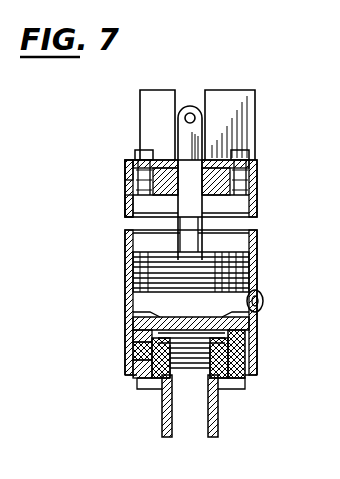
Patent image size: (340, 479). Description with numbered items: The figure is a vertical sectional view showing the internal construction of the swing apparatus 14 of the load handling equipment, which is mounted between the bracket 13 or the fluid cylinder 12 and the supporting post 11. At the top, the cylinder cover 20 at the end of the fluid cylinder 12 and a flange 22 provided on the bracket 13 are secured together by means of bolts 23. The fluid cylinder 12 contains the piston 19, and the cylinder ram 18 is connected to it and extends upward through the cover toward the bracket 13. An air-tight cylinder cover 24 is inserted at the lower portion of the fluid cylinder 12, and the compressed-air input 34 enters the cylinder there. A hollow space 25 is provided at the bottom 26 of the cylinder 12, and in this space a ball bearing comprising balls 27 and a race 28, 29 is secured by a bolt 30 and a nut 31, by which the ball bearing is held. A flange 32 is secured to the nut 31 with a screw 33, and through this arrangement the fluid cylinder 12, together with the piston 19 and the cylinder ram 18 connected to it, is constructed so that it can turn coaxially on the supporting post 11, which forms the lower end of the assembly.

The post 11 is at (220, 435).
The fluid cylinder 12 is at (257, 208).
The bracket 13 is at (258, 110).
The swing apparatus 14 is at (258, 387).
The cylinder ram 18 is at (255, 165).
The piston 19 is at (250, 262).
The cylinder cover 20 is at (125, 213).
The flange 22 is at (125, 167).
The bolts 23 is at (135, 153).
The air-tight cylinder cover 24 is at (257, 342).
The hollow space 25 is at (135, 312).
The bottom 26 is at (215, 306).
The balls 27 is at (133, 348).
The race 28 is at (133, 332).
The race 29 is at (133, 372).
The bolt 30 is at (162, 388).
The nut 31 is at (137, 373).
The flange 32 is at (245, 381).
The screw 33 is at (230, 388).
The compressed-air input 34 is at (262, 302).